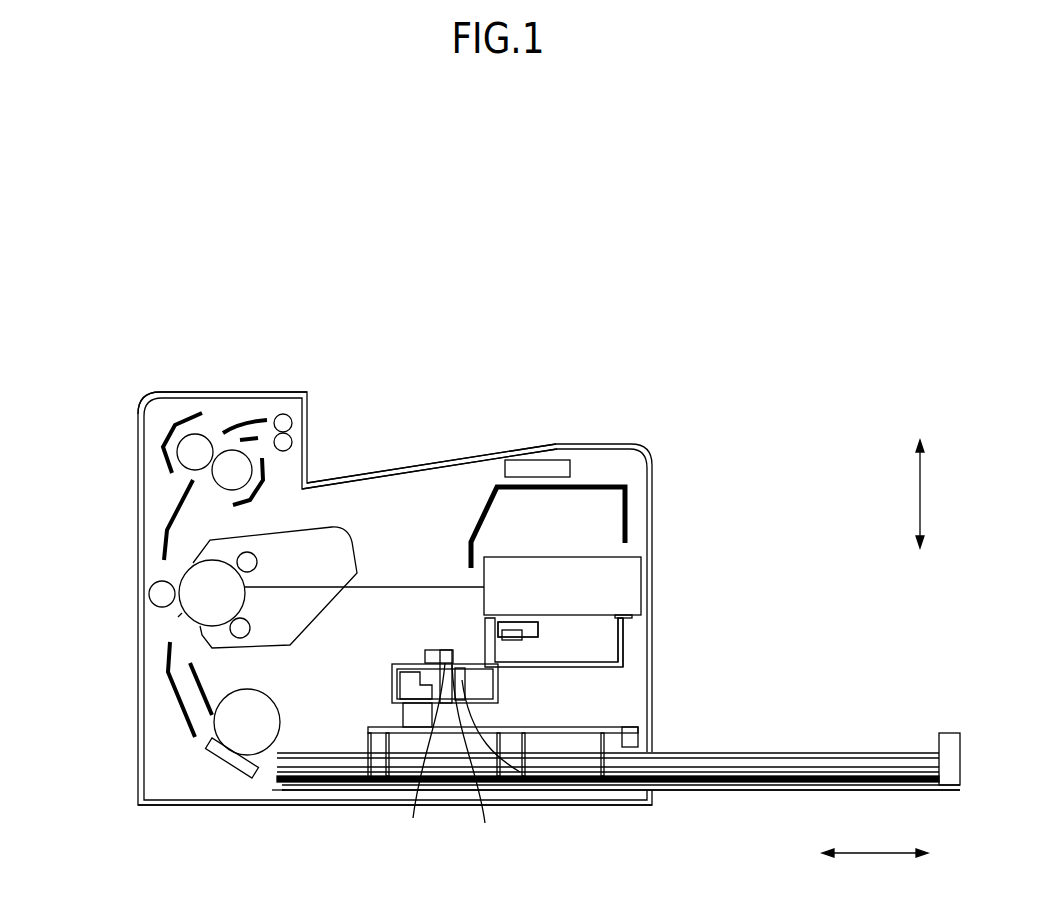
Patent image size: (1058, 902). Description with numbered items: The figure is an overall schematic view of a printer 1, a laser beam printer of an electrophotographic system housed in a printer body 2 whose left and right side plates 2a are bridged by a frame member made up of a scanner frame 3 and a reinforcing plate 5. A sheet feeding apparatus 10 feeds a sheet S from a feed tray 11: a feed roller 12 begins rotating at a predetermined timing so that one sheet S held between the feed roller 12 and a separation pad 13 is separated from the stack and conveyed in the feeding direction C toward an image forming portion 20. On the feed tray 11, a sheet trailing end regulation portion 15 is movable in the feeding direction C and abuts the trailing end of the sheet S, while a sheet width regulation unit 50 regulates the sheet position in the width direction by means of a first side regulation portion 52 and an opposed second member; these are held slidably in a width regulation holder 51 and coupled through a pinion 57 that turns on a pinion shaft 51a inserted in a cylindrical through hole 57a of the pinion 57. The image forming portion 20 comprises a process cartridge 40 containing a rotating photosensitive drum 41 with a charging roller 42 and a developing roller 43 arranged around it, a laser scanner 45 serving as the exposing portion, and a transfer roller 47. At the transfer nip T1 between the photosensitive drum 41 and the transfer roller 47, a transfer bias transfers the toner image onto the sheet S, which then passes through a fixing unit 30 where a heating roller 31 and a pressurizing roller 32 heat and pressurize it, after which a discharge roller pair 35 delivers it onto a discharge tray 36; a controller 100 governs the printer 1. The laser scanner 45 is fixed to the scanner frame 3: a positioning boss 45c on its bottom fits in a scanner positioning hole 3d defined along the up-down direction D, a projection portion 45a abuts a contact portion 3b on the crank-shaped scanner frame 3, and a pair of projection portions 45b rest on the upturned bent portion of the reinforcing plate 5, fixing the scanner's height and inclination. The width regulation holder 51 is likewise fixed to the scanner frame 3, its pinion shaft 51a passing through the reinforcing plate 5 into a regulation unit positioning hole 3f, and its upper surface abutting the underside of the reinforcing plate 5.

The printer 1 is at (658, 397).
The printer body 2 is at (145, 500).
The side plates 2a is at (158, 757).
The scanner frame 3 is at (508, 665).
The contact portion 3b is at (490, 622).
The scanner positioning hole 3d is at (512, 620).
The regulation unit positioning hole 3f is at (445, 650).
The reinforcing plate 5 is at (630, 657).
The sheet feeding apparatus 10 is at (264, 780).
The feed tray 11 is at (740, 792).
The feed roller 12 is at (220, 730).
The separation pad 13 is at (222, 758).
The sheet trailing end regulation portion 15 is at (948, 733).
The image forming portion 20 is at (231, 539).
The fixing unit 30 is at (202, 399).
The heating roller 31 is at (235, 458).
The pressurizing roller 32 is at (185, 452).
The discharge roller pair 35 is at (285, 422).
The discharge tray 36 is at (462, 458).
The process cartridge 40 is at (360, 552).
The photosensitive drum 41 is at (183, 575).
The charging roller 42 is at (252, 562).
The developing roller 43 is at (250, 630).
The laser scanner 45 is at (630, 585).
The projection portion 45a is at (483, 620).
The projection portions 45b is at (630, 625).
The positioning boss 45c is at (513, 642).
The transfer roller 47 is at (152, 595).
The sheet width regulation unit 50 is at (439, 657).
The width regulation holder 51 is at (493, 685).
The pinion shaft 51a is at (486, 761).
The first side regulation portion 52 is at (632, 740).
The pinion 57 is at (537, 780).
The cylindrical through hole 57a is at (419, 754).
The controller 100 is at (540, 460).
The transfer nip T1 is at (170, 620).
The sheet S is at (817, 752).
The up-down direction D is at (906, 494).
The feeding direction C is at (875, 838).